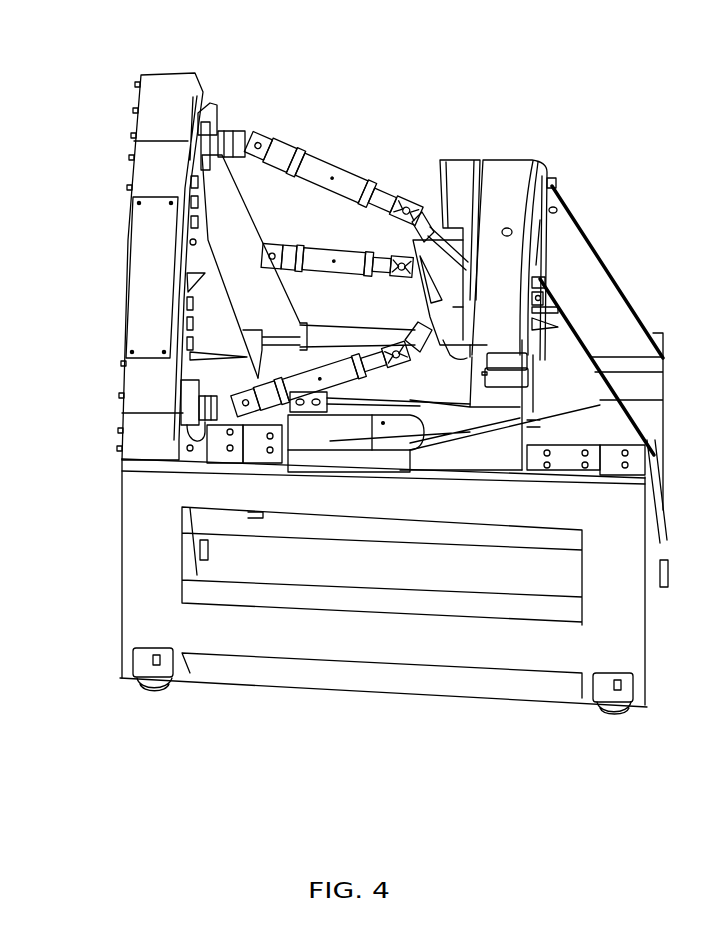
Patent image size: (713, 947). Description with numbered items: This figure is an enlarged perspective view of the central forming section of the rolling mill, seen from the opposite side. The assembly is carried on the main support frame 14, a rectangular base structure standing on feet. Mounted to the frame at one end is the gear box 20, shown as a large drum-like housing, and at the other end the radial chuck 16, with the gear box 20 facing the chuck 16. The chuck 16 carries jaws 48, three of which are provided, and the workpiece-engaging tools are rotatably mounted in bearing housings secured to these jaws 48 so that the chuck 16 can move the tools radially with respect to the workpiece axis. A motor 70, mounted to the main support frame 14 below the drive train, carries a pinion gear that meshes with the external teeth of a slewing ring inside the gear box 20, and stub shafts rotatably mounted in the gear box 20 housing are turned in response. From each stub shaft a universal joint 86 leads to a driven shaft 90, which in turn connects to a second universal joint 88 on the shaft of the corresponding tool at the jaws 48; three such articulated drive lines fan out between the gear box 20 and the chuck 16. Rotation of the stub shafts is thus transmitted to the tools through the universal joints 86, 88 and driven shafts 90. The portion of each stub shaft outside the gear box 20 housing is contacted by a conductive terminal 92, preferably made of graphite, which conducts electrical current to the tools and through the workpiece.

The main support frame 14 is at (379, 648).
The radial chuck 16 is at (512, 170).
The gear box 20 is at (172, 93).
The jaws 48 is at (460, 173).
The motor 70 is at (347, 423).
The universal joint 86 is at (282, 136).
The universal joint 88 is at (405, 200).
The driven shaft 90 is at (330, 167).
The conductive terminal 92 is at (218, 120).